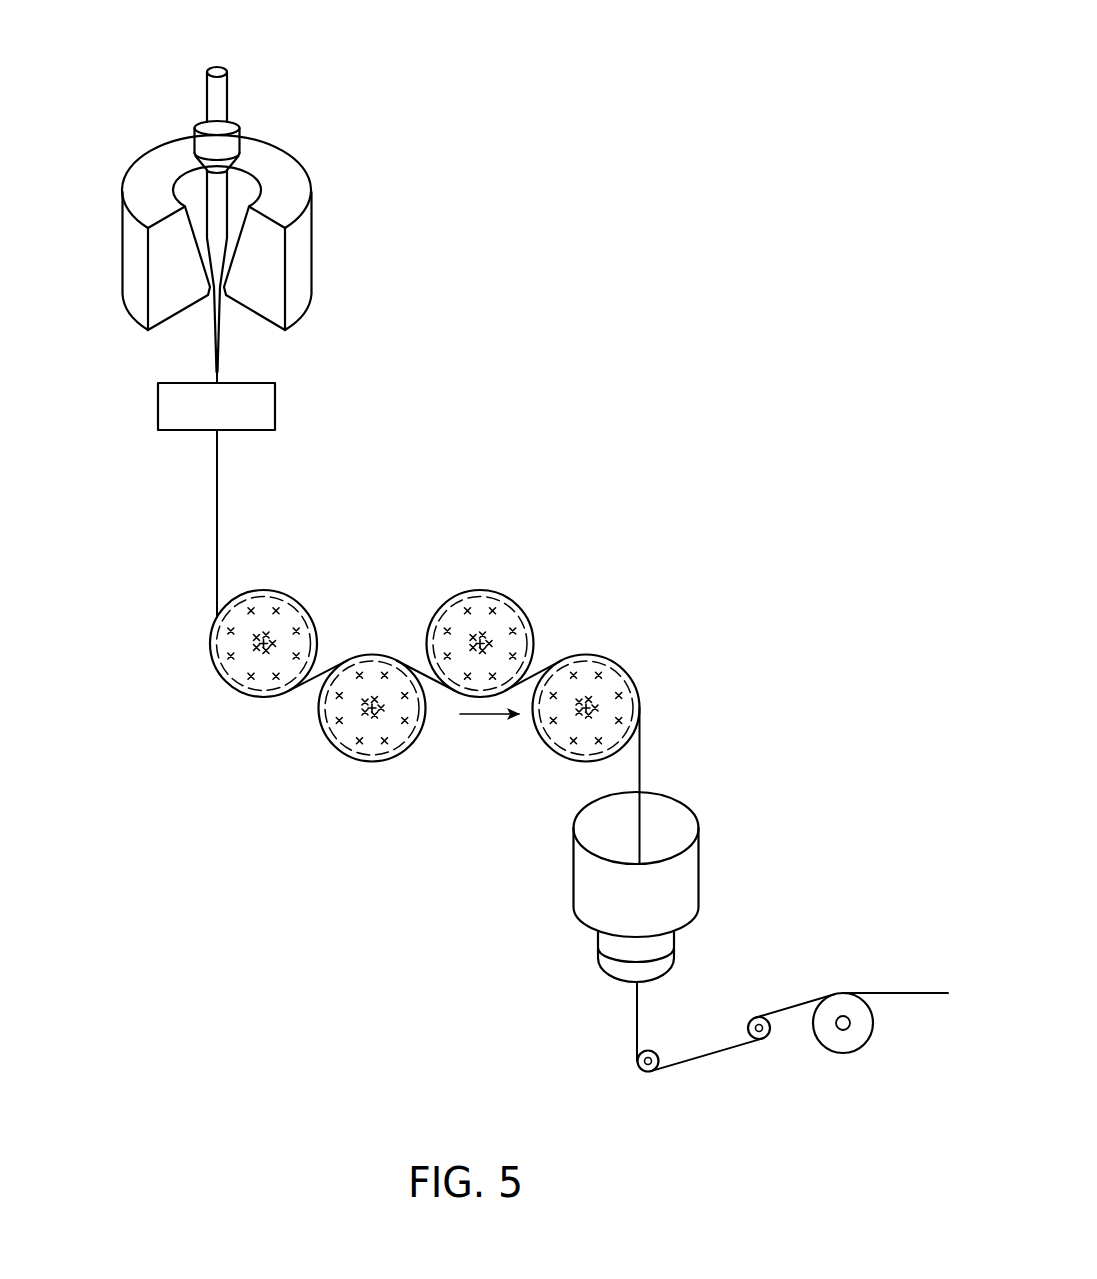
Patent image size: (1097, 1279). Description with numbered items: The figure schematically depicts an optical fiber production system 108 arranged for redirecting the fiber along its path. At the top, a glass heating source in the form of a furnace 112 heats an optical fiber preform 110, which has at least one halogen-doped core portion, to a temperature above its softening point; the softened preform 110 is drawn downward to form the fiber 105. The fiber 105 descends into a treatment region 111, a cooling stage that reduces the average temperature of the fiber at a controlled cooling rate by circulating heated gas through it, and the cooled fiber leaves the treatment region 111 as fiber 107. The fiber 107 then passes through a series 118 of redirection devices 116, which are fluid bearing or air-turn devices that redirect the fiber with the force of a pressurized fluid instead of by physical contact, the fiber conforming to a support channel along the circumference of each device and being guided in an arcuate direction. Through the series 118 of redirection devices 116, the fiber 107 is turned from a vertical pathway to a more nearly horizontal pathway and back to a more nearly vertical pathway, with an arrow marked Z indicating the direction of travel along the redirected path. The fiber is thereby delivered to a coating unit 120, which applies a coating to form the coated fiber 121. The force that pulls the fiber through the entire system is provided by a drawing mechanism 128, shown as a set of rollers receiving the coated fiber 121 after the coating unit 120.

The optical fiber production system 108 is at (124, 113).
The furnace 112 is at (267, 140).
The optical fiber preform 110 is at (228, 197).
The fiber 105 is at (217, 372).
The treatment region 111 is at (275, 405).
The fiber 107 is at (217, 492).
The series of redirection devices 118 is at (417, 548).
The redirection device 116 is at (264, 590).
The machine direction Z is at (483, 714).
The coating unit 120 is at (698, 862).
The coated fiber 121 is at (637, 1022).
The drawing mechanism 128 is at (760, 1017).